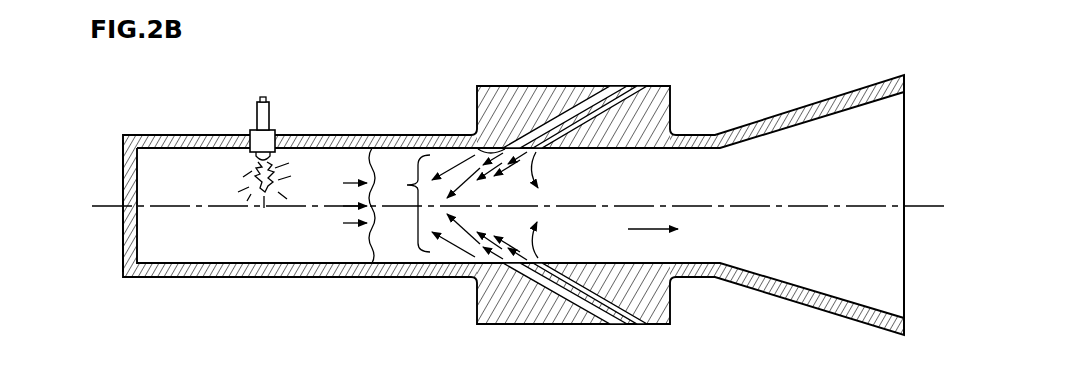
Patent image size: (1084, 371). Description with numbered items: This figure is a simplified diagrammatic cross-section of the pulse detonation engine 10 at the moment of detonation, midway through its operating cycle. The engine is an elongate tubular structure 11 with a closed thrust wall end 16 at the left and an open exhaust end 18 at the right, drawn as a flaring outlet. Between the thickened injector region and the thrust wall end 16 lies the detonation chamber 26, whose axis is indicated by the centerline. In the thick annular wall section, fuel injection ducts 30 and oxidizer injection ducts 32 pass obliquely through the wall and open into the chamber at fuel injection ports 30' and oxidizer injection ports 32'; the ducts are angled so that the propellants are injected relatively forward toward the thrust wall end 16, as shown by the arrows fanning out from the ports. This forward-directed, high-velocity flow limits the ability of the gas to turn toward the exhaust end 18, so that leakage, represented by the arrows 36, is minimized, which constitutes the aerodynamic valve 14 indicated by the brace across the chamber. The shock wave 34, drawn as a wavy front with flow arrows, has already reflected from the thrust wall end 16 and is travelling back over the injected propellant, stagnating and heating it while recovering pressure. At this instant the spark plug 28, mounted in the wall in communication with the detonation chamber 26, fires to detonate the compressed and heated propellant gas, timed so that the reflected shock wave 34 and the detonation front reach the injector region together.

The pulse detonation engine 10 is at (166, 116).
The elongate tubular structure 11 is at (358, 132).
The aerodynamic valve 14 is at (403, 203).
The thrust wall end 16 is at (122, 162).
The exhaust end 18 is at (895, 112).
The detonation chamber 26 is at (252, 240).
The spark plug 28 is at (260, 125).
The fuel injection ducts 30 is at (573, 205).
The fuel injection ports 30' is at (553, 203).
The oxidizer injection ducts 32 is at (529, 205).
The oxidizer injection ports 32' is at (473, 130).
The shock wave 34 is at (370, 160).
The leakage arrows 36 is at (653, 228).